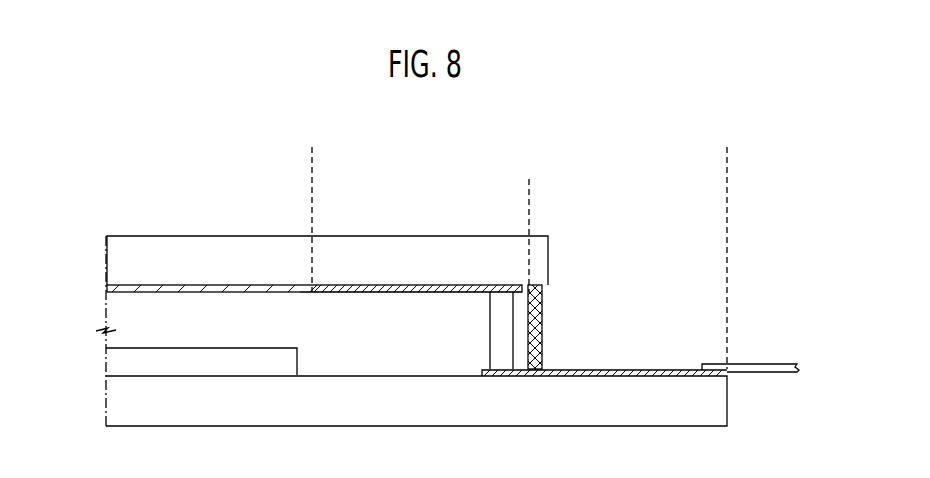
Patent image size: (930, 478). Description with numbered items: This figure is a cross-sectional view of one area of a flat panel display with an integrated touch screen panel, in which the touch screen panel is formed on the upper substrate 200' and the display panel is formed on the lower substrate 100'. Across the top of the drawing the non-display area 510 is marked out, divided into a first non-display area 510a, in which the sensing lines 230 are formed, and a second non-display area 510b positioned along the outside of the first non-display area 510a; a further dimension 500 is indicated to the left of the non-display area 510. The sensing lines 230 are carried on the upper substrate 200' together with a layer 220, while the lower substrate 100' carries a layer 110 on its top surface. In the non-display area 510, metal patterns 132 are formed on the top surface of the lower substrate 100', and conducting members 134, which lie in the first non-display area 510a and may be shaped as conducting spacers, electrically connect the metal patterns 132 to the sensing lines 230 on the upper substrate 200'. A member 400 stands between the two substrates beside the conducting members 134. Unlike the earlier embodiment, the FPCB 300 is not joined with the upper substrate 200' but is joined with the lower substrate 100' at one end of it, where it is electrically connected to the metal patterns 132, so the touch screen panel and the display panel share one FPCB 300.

The lower substrate 100' is at (452, 401).
The first layer on substrate 110 is at (108, 366).
The metal patterns 132 is at (650, 369).
The conducting members 134 is at (500, 348).
The upper substrate 200' is at (363, 260).
The conductive layer of upper substrate 220 is at (107, 286).
The sensing lines 230 is at (395, 285).
The FPCB 300 is at (750, 364).
The sealing member 400 is at (542, 305).
The first region width 500 is at (309, 200).
The non-display area 510 is at (313, 148).
The first non-display area 510a is at (528, 179).
The second non-display area 510b is at (530, 179).